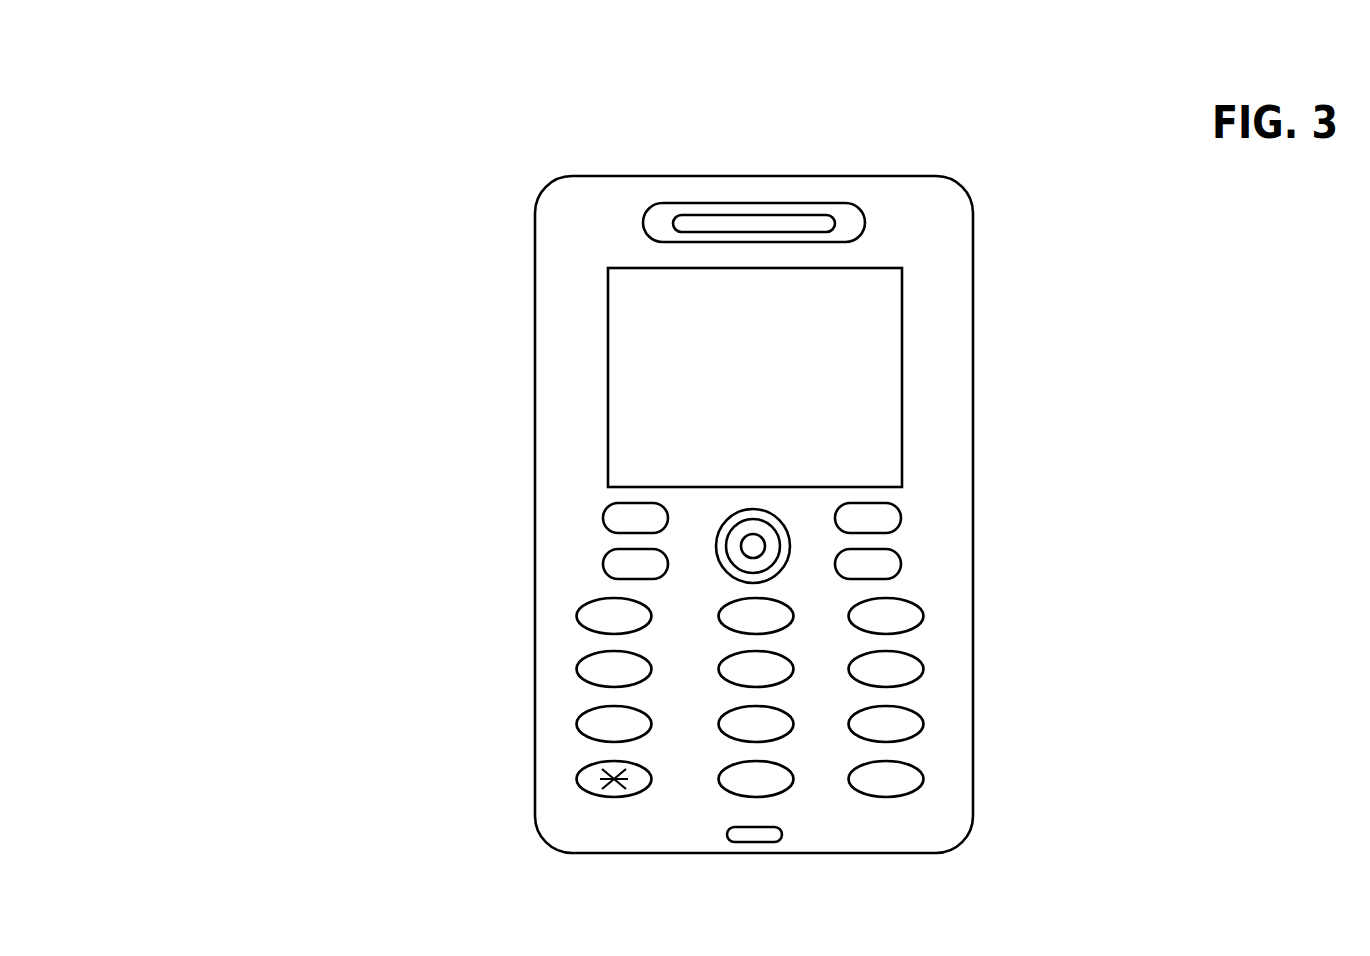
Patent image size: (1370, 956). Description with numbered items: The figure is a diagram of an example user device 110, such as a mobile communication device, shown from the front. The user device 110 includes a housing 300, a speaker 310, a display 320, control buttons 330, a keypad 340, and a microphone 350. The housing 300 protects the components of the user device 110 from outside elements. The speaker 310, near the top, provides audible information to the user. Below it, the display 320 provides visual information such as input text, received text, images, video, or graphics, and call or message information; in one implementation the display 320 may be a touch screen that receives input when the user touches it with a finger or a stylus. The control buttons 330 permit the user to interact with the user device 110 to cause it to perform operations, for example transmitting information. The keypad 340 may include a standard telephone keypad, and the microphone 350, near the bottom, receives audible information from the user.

The user device 110 is at (245, 73).
The housing 300 is at (535, 518).
The speaker 310 is at (755, 205).
The display 320 is at (902, 377).
The control buttons 330 is at (918, 496).
The keypad 340 is at (938, 798).
The microphone 350 is at (756, 842).